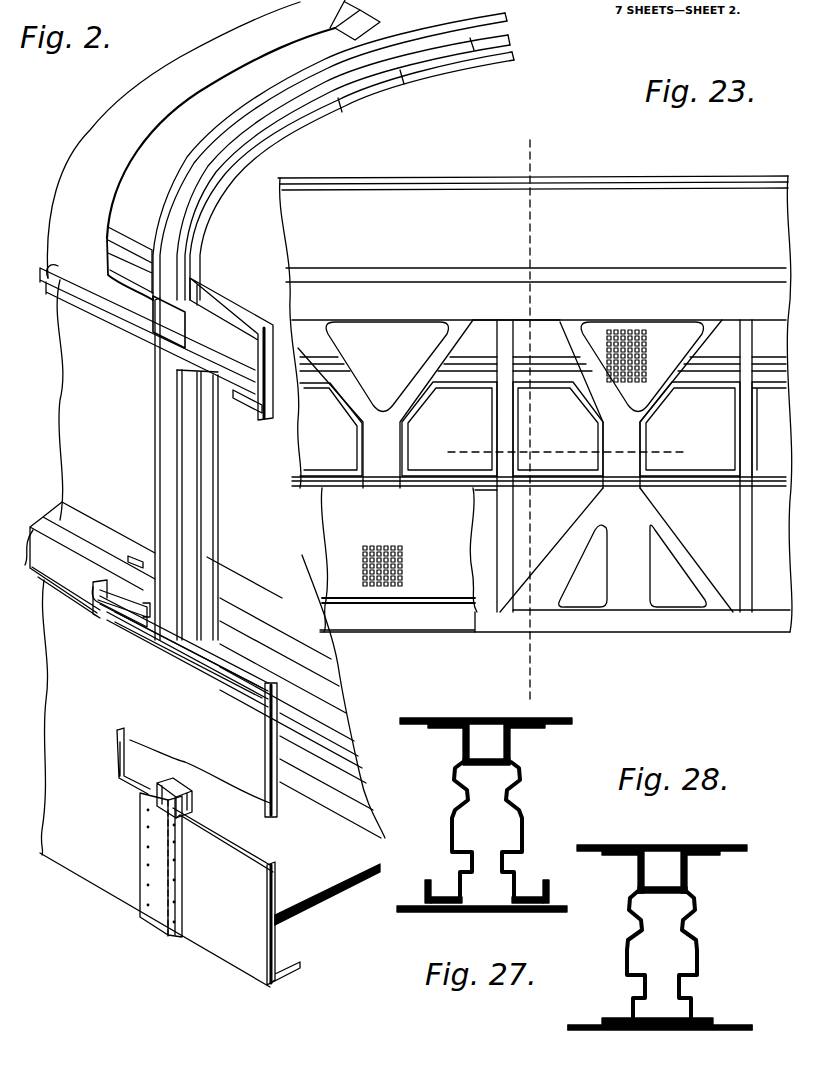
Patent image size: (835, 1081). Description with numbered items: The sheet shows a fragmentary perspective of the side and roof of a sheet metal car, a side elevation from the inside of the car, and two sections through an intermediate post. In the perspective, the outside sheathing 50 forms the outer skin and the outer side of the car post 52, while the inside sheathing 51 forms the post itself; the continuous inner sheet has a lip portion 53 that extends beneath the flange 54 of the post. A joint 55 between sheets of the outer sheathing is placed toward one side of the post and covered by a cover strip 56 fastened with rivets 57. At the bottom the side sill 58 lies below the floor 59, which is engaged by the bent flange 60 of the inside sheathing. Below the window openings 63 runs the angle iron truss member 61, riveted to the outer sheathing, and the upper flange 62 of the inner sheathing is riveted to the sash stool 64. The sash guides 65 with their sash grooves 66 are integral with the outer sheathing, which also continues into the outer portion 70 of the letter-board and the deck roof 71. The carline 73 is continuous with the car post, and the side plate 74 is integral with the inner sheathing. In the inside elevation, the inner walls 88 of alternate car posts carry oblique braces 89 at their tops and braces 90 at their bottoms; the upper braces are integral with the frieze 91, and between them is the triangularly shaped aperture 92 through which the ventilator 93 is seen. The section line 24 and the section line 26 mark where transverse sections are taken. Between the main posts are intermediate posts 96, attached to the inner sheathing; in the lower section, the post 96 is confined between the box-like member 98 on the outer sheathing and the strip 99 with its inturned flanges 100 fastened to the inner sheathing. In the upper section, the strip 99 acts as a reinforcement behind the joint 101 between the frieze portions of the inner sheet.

In FIG. 23, the section line 24 is at (520, 151).
In FIG. 23, the section line 26 is at (471, 454).
In FIG. 2, the outside sheathing 50 is at (55, 695).
In FIG. 27, the outside sheathing 50 is at (446, 720).
In FIG. 28, the outside sheathing 50 is at (659, 845).
In FIG. 2, the inside sheathing 51 is at (281, 717).
In FIG. 27, the inside sheathing 51 is at (537, 910).
In FIG. 2, the car post 52 is at (173, 787).
In FIG. 2, the lip portion 53 is at (183, 828).
In FIG. 2, the flange 54 is at (194, 799).
In FIG. 2, the joint 55 is at (165, 933).
In FIG. 2, the cover strip 56 is at (150, 918).
In FIG. 2, the rivets 57 is at (148, 827).
In FIG. 2, the side sill 58 is at (282, 966).
In FIG. 2, the floor 59 is at (296, 696).
In FIG. 2, the flange 60 is at (290, 930).
In FIG. 2, the truss member 61 is at (248, 692).
In FIG. 2, the flange 62 is at (220, 647).
In FIG. 2, the openings 63 is at (128, 469).
In FIG. 2, the sash stool 64 is at (90, 564).
In FIG. 2, the sash guides 65 is at (200, 508).
In FIG. 2, the sash grooves 66 is at (205, 462).
In FIG. 2, the outer portion of the letter-board 70 is at (60, 263).
In FIG. 2, the deck roof 71 is at (243, 174).
In FIG. 2, the carline 73 is at (303, 117).
In FIG. 2, the side plate 74 is at (248, 372).
In FIG. 23, the inner walls of the car posts 88 is at (544, 476).
In FIG. 23, the braces 89 is at (572, 363).
In FIG. 23, the braces 90 is at (558, 563).
In FIG. 23, the frieze 91 is at (625, 302).
In FIG. 28, the frieze 91 is at (576, 1030).
In FIG. 23, the triangularly shaped aperture 92 is at (597, 360).
In FIG. 23, the ventilator 93 is at (640, 330).
In FIG. 23, the intermediate posts 96 is at (503, 557).
In FIG. 27, the intermediate posts 96 is at (452, 815).
In FIG. 28, the intermediate posts 96 is at (699, 943).
In FIG. 27, the box-like member 98 is at (462, 750).
In FIG. 28, the box-like member 98 is at (688, 870).
In FIG. 27, the strip 99 is at (430, 908).
In FIG. 28, the strip 99 is at (608, 1027).
In FIG. 27, the inturned flanges 100 is at (428, 882).
In FIG. 28, the joint 101 is at (663, 1032).